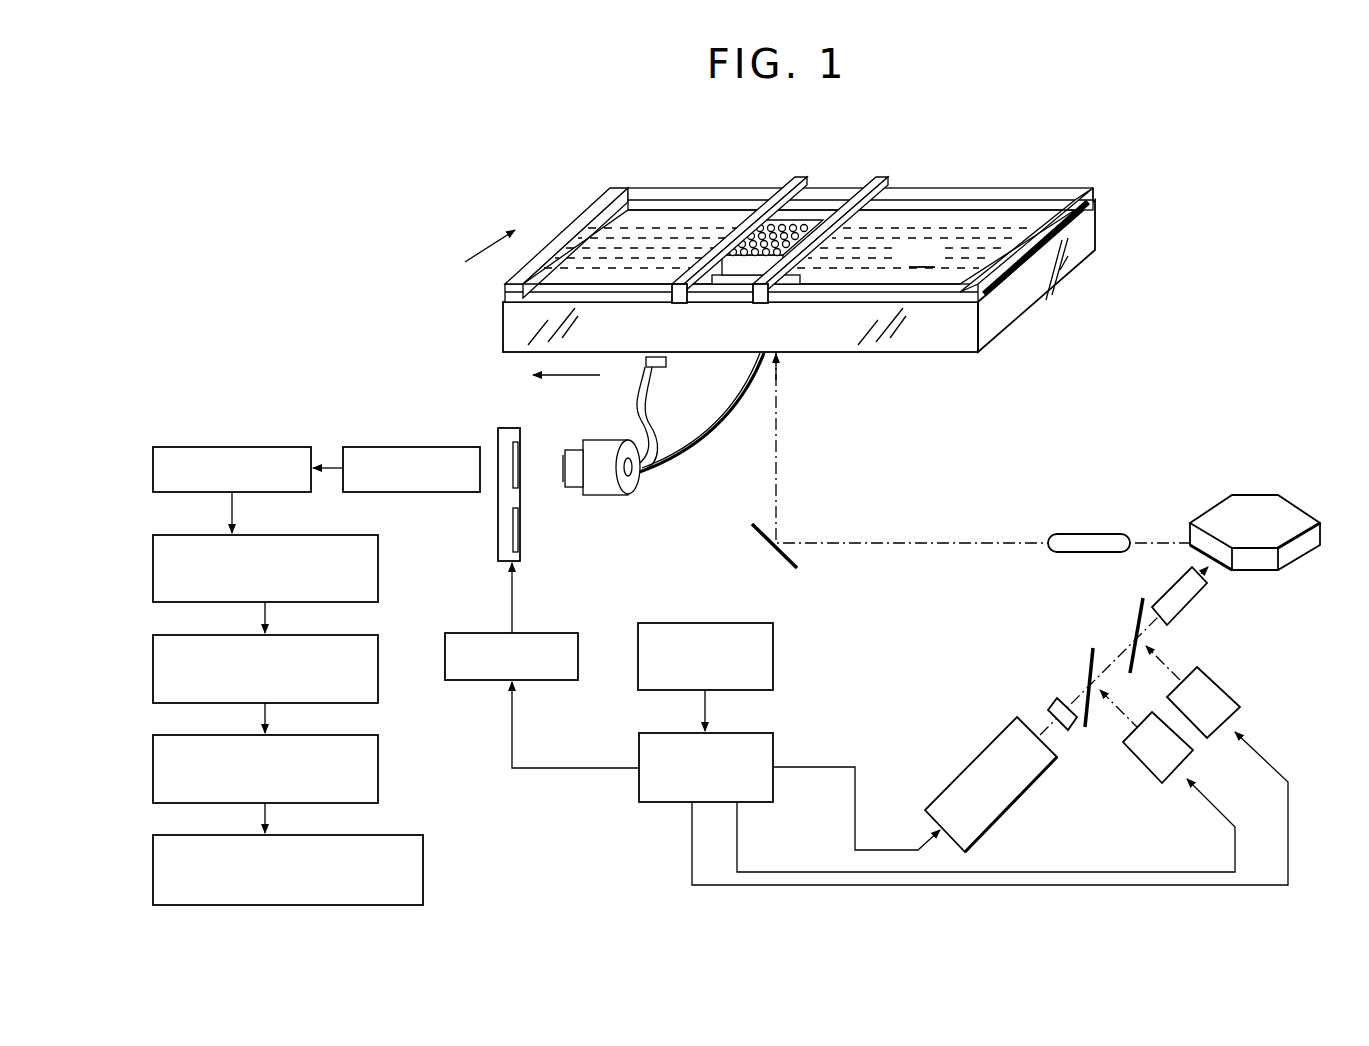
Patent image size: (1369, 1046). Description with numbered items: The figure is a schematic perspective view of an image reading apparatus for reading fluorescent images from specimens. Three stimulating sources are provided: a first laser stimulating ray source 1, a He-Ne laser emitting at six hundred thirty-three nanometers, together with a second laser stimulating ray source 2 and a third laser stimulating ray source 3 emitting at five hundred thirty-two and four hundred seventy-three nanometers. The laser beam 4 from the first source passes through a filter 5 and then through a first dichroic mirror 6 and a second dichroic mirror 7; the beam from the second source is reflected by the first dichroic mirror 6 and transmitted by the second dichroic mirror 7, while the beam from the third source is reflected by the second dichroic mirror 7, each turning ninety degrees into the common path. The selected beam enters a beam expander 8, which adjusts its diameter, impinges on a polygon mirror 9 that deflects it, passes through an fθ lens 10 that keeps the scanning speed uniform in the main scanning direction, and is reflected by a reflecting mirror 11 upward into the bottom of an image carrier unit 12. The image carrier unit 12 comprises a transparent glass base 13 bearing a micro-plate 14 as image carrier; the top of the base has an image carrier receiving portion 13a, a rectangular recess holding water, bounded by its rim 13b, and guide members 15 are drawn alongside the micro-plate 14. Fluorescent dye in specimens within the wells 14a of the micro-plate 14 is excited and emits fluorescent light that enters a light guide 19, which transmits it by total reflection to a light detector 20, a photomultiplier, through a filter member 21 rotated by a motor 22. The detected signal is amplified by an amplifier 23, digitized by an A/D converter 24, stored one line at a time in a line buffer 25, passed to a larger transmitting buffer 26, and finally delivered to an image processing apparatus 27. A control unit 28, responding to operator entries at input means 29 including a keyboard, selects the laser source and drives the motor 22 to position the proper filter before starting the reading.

The first laser stimulating ray source 1 is at (962, 782).
The second laser stimulating ray source 2 is at (1180, 752).
The third laser stimulating ray source 3 is at (1235, 710).
The laser beam 4 is at (893, 542).
The filter 5 is at (1050, 700).
The first dichroic mirror 6 is at (1090, 665).
The second dichroic mirror 7 is at (1138, 620).
The beam expander 8 is at (1192, 608).
The polygon mirror 9 is at (1250, 519).
The fθ lens 10 is at (1094, 534).
The reflecting mirror 11 is at (786, 562).
The image carrier unit 12 is at (596, 176).
The base 13 is at (931, 349).
The image carrier receiving portion 13a is at (1028, 220).
The frame rim 13b is at (1093, 193).
The micro-plate 14 is at (821, 212).
The wells 14a is at (792, 223).
The guide rail 15 is at (741, 214).
The light guide 19 is at (674, 448).
The light detector 20 is at (378, 447).
The filter member 21 is at (508, 520).
The motor 22 is at (476, 681).
The amplifier 23 is at (188, 447).
The A/D converter 24 is at (378, 552).
The line buffer 25 is at (378, 650).
The transmitting buffer 26 is at (378, 760).
The image processing apparatus 27 is at (423, 860).
The control unit 28 is at (656, 803).
The input means 29 is at (773, 643).